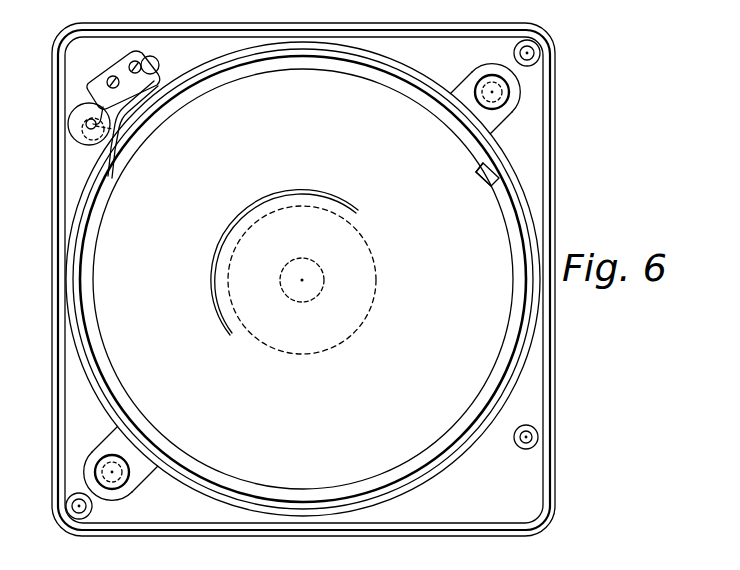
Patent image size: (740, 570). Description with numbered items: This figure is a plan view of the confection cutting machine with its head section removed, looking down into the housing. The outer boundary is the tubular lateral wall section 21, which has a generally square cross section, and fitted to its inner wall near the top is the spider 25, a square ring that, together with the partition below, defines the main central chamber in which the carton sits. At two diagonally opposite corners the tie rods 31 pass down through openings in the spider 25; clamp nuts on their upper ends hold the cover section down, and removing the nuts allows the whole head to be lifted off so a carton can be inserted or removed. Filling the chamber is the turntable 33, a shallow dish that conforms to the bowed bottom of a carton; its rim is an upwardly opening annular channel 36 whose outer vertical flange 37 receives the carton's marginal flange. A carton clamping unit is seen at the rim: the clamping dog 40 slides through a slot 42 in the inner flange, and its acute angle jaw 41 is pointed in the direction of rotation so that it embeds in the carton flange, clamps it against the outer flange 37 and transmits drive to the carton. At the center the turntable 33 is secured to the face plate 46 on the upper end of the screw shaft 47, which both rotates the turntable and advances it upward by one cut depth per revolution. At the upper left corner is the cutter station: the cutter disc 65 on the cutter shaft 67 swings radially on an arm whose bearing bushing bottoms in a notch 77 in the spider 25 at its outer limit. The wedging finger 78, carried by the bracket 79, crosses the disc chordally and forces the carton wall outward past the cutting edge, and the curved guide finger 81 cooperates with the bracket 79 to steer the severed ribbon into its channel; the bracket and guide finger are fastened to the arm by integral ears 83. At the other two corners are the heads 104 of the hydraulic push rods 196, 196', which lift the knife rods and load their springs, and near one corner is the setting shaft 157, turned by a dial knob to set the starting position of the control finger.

The tubular lateral wall section 21 is at (551, 350).
The spider 25 is at (541, 154).
The tie rods 31 is at (534, 47).
The turntable 33 is at (295, 167).
The annular channel 36 is at (93, 309).
The outer vertical flange 37 is at (79, 282).
The clamping dog 40 is at (488, 182).
The acute angle jaw 41 is at (498, 177).
The slot 42 is at (477, 171).
The face plate 46 is at (372, 301).
The screw shaft 47 is at (324, 280).
The cutter disc 65 is at (69, 128).
The cutter shaft 67 is at (86, 123).
The notch 77 is at (95, 137).
The wedging finger 78 is at (118, 145).
The bracket 79 is at (157, 80).
The guide finger 81 is at (107, 92).
The integral ears 83 is at (123, 64).
The heads 104 is at (503, 103).
The setting shaft 157 is at (540, 435).
The push rod 196 is at (121, 472).
The push rod 196' is at (486, 99).